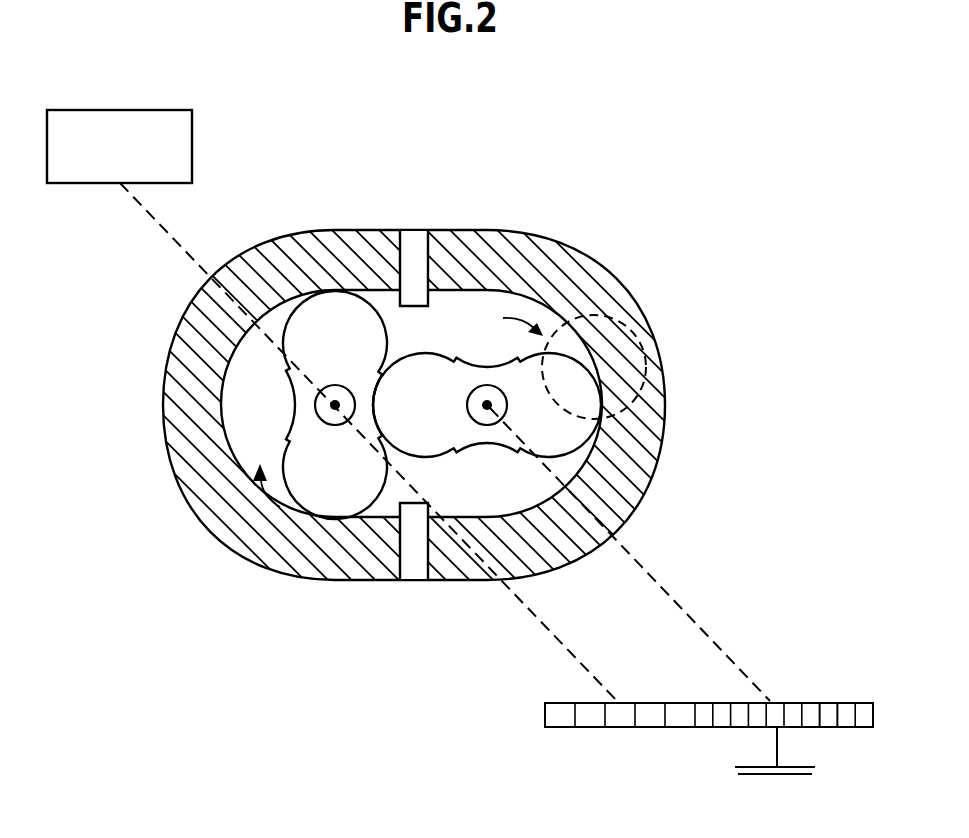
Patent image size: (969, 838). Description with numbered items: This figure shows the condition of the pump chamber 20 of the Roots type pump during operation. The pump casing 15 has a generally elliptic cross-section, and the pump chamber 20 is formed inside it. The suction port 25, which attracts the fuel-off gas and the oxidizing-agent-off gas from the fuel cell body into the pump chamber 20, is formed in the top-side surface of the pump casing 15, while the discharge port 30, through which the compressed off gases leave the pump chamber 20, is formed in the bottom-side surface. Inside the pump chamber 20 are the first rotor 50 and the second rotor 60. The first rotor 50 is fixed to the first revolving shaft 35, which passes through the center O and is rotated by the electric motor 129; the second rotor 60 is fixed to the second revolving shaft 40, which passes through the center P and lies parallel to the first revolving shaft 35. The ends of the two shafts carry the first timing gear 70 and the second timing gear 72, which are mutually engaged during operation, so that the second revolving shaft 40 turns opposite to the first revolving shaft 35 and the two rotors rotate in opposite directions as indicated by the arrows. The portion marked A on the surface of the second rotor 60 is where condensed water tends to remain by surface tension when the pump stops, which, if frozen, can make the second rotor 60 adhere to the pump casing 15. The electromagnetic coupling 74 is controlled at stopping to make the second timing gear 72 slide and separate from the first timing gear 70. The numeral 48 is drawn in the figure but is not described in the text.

The electric motor 129 is at (145, 110).
The pump unit 48 is at (291, 163).
The pump casing 15 is at (653, 428).
The suction port 25 is at (415, 228).
The discharge port 30 is at (412, 582).
The pump chamber 20 is at (533, 306).
The first rotor 50 is at (316, 483).
The second revolving shaft 40 is at (487, 384).
The first revolving shaft 35 is at (335, 428).
The second rotor 60 is at (567, 430).
The portion where condensed water is left A is at (650, 371).
The center of first revolving shaft O is at (316, 405).
The center of second revolving shaft P is at (488, 425).
The first timing gear 70 is at (588, 728).
The second timing gear 72 is at (820, 700).
The electromagnetic coupling 74 is at (790, 775).